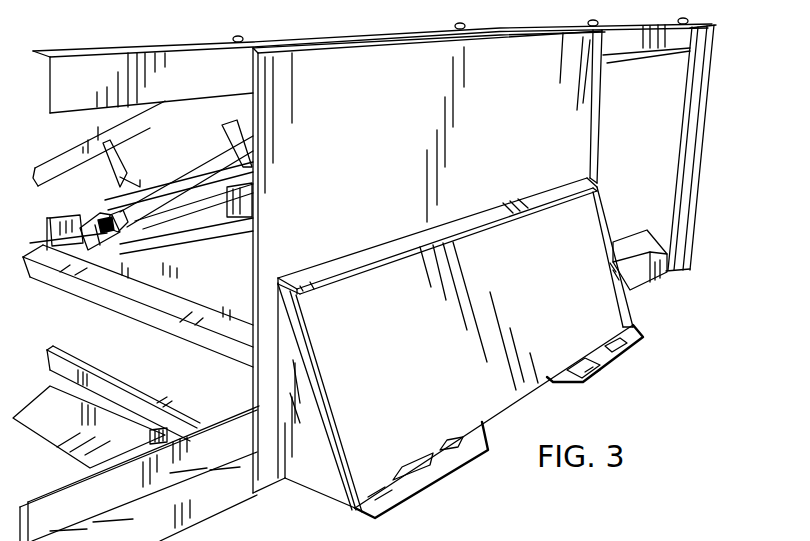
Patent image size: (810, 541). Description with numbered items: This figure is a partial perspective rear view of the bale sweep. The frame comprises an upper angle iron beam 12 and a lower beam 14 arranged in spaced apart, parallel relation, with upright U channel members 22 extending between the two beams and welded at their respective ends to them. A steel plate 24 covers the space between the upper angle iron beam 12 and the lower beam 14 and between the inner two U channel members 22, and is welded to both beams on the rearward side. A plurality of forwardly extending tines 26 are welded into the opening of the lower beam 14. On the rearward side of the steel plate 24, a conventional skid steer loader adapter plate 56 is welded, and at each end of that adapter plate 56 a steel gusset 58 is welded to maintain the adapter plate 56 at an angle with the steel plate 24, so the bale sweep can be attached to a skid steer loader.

The upper angle iron beam 12 is at (100, 47).
The lower beam 14 is at (227, 412).
The upright U channel members 22 is at (693, 192).
The steel plate 24 is at (573, 127).
The tines 26 is at (90, 355).
The skid steer loader adapter plate 56 is at (613, 318).
The steel gusset 58 is at (312, 485).